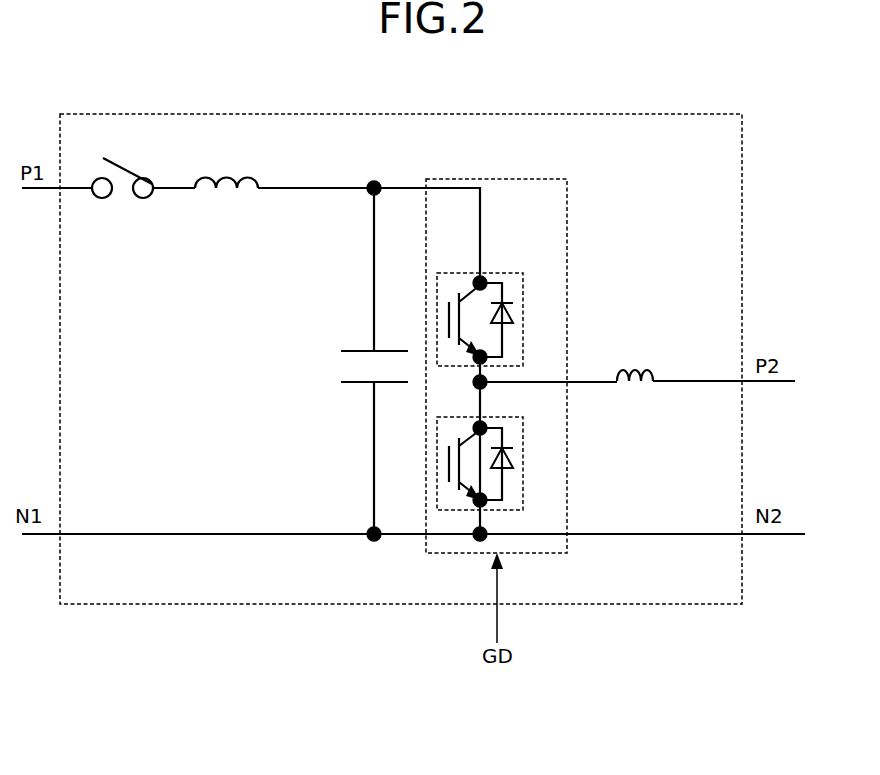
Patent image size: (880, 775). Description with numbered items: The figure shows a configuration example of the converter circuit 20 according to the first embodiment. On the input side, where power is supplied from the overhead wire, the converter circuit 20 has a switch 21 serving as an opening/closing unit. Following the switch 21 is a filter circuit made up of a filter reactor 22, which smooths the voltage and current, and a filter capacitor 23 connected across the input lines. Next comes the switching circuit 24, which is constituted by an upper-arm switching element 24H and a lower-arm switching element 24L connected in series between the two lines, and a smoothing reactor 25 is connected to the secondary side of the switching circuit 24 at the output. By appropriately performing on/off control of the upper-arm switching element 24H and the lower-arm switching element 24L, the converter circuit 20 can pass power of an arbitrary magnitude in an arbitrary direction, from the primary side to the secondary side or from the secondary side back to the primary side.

The converter circuit 20 is at (237, 113).
The switch 21 is at (134, 172).
The filter reactor 22 is at (253, 173).
The filter capacitor 23 is at (355, 350).
The switching circuit 24 is at (545, 178).
The upper-arm switching element 24H is at (523, 275).
The lower-arm switching element 24L is at (545, 414).
The smoothing reactor 25 is at (650, 368).